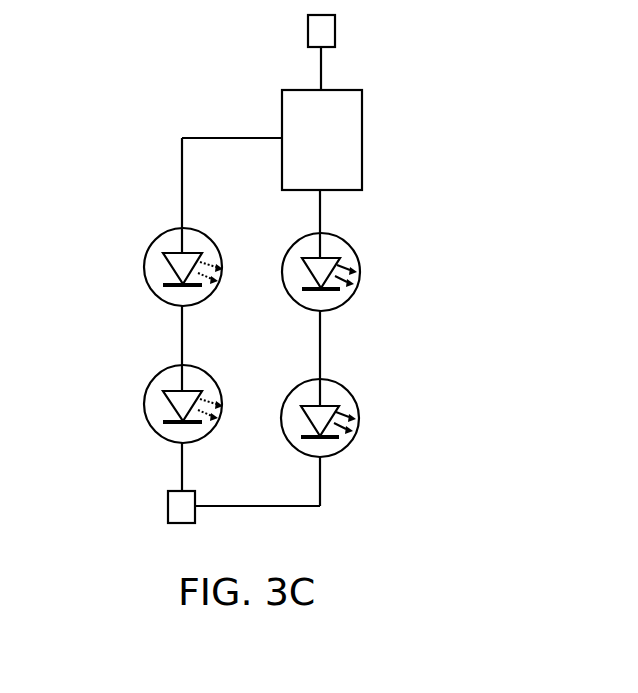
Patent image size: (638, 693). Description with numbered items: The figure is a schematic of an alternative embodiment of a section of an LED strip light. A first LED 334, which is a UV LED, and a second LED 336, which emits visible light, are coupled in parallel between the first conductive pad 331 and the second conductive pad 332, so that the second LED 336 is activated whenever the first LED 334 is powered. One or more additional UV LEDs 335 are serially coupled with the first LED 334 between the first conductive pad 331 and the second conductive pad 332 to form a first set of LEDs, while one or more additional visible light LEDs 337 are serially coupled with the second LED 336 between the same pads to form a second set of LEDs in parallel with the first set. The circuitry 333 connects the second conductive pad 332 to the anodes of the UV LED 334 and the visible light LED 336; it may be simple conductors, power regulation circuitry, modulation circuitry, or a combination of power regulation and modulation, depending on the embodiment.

The first conductive pad 331 is at (180, 503).
The second conductive pad 332 is at (325, 33).
The circuitry 333 is at (362, 100).
The first LED 334 is at (148, 292).
The additional UV LED 335 is at (143, 420).
The second LED 336 is at (351, 243).
The additional visible light LED 337 is at (345, 385).